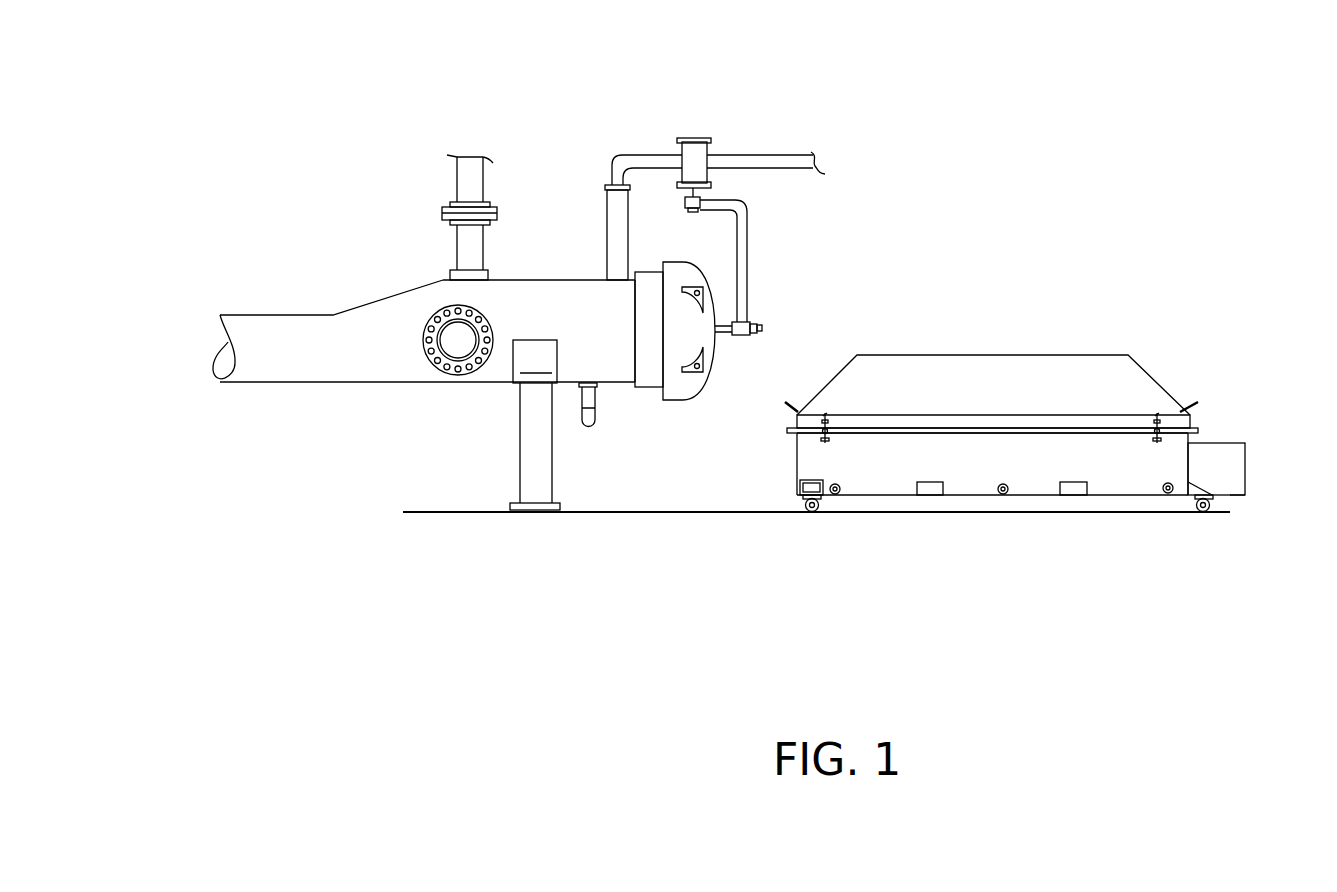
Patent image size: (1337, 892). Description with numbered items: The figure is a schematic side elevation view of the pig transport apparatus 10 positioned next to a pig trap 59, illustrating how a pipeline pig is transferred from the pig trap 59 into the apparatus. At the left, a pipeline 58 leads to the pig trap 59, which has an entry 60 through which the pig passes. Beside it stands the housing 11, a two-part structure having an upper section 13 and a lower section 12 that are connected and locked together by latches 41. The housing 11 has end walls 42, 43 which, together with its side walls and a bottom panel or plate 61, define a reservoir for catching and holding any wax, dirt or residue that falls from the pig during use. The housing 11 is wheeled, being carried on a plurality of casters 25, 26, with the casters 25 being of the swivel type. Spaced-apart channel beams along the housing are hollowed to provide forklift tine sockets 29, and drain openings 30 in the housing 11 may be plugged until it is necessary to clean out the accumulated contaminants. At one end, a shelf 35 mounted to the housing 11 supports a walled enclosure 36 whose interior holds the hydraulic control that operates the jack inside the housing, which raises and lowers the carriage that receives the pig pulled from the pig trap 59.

The pig transport apparatus 10 is at (1150, 253).
The housing 11 is at (1000, 355).
The lower section 12 is at (992, 552).
The upper section 13 is at (993, 331).
The casters 25 is at (1203, 512).
The casters 26 is at (813, 510).
The forklift tine sockets 29 is at (932, 495).
The drain openings 30 is at (833, 495).
The shelf 35 is at (1235, 500).
The walled enclosure 36 is at (1227, 467).
The latches 41 is at (830, 440).
The end wall 42 is at (792, 440).
The end wall 43 is at (1205, 440).
The pipeline 58 is at (348, 338).
The pig trap 59 is at (577, 293).
The entry 60 is at (662, 272).
The bottom panel or plate 61 is at (1015, 495).